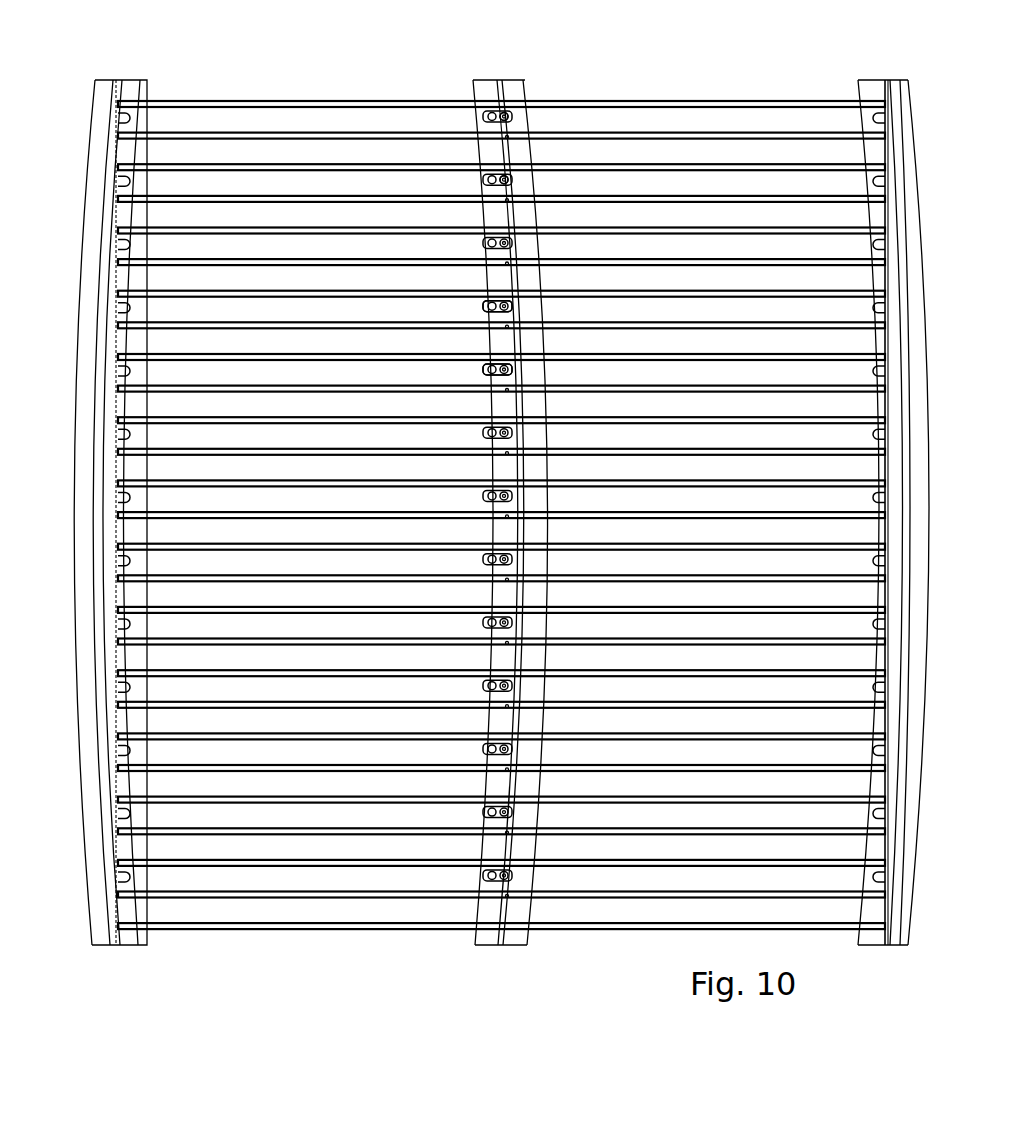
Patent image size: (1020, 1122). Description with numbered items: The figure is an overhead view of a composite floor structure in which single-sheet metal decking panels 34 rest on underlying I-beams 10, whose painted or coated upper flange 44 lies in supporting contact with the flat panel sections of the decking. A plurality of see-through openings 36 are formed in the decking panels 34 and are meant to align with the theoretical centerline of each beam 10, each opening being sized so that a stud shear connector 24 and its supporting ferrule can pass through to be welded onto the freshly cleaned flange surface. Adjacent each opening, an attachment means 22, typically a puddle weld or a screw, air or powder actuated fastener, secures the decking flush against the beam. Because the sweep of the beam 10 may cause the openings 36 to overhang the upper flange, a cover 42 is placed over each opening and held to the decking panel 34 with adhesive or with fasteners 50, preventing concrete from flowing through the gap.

The I-beam 10 is at (480, 952).
The attachment means 22 is at (513, 114).
The stud shear connector 24 is at (517, 164).
The composite floor decking panel 34 is at (316, 947).
The see-through openings 36 is at (481, 162).
The cover 42 is at (467, 376).
The painted or coated upper flange of horizontal beam 44 is at (114, 954).
The fasteners for covers 50 is at (465, 308).